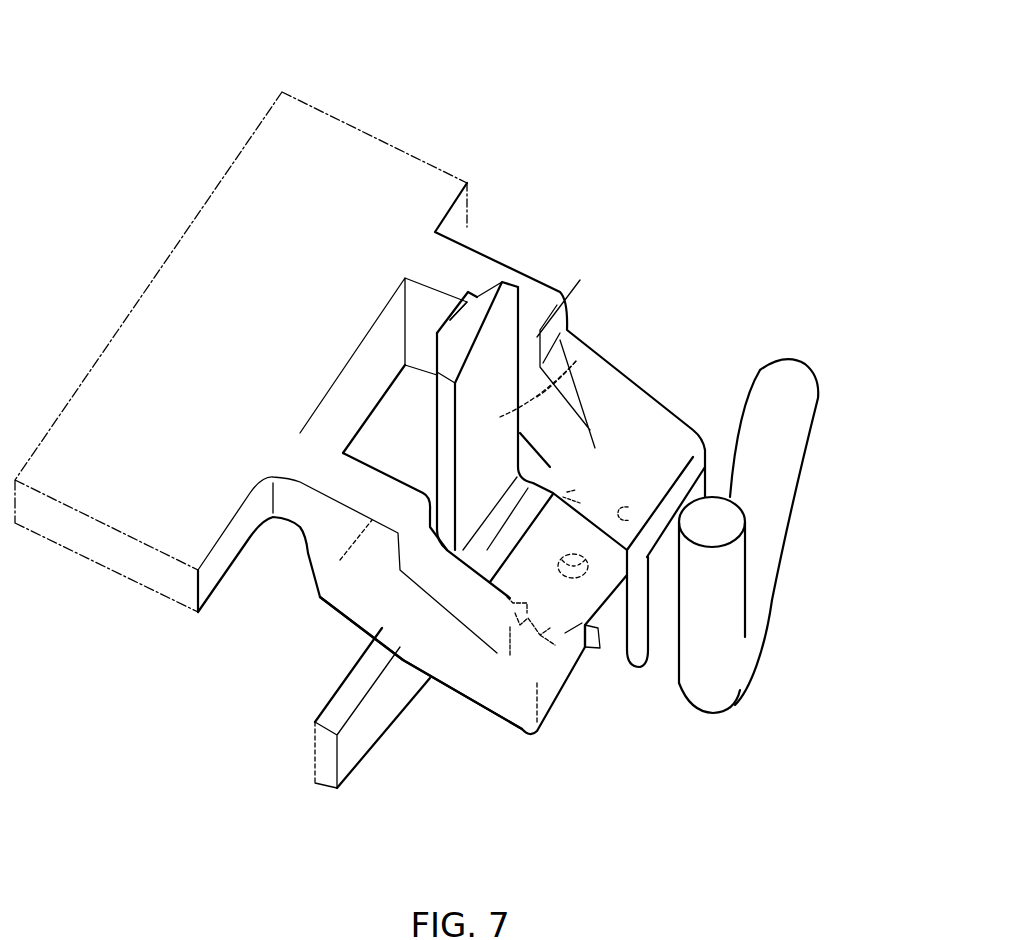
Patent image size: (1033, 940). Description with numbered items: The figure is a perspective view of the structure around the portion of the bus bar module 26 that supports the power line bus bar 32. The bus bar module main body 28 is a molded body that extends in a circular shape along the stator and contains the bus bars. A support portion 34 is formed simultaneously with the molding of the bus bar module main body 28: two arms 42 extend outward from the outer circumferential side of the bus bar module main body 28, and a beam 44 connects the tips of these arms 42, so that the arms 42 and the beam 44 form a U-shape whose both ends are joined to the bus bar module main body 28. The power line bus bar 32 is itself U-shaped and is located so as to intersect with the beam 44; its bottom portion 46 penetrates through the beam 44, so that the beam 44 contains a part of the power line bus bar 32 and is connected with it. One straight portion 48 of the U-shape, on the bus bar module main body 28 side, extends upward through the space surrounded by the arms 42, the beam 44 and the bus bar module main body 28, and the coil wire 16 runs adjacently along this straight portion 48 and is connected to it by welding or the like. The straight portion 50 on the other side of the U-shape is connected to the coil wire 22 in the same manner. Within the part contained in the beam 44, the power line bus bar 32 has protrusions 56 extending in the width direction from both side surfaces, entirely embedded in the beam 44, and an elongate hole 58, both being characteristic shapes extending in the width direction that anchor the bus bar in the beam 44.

The coil wire 16 is at (468, 300).
The coil wire 22 is at (780, 437).
The bus bar module 26 is at (578, 74).
The bus bar module main body 28 is at (378, 187).
The power line bus bar 32 is at (522, 421).
The support portion 34 is at (428, 690).
The arms 42 is at (533, 293).
The beam 44 is at (553, 683).
The bottom portion 46 is at (603, 673).
The straight portion 48 is at (493, 357).
The straight portion 50 is at (660, 613).
The protrusions 56 is at (583, 537).
The elongate hole 58 is at (574, 552).